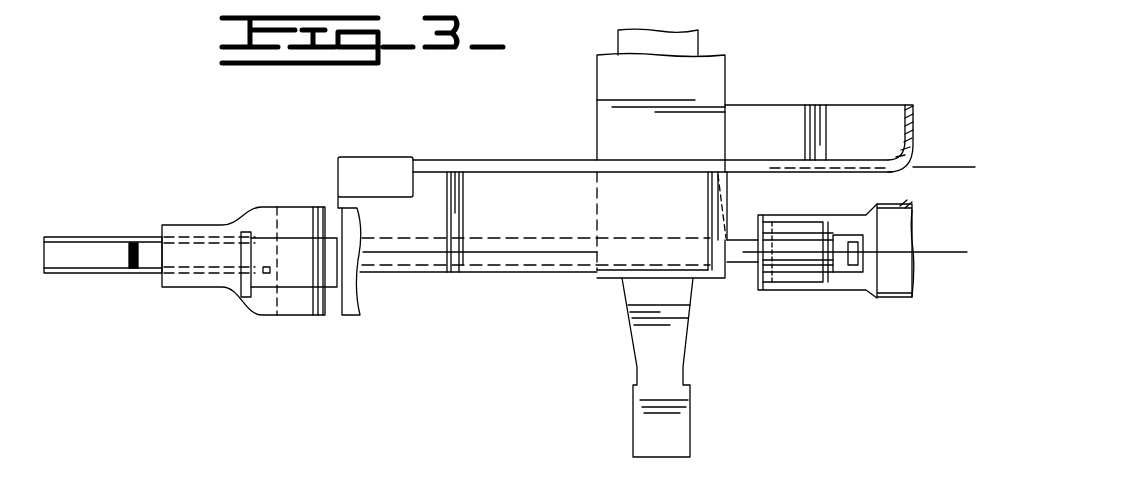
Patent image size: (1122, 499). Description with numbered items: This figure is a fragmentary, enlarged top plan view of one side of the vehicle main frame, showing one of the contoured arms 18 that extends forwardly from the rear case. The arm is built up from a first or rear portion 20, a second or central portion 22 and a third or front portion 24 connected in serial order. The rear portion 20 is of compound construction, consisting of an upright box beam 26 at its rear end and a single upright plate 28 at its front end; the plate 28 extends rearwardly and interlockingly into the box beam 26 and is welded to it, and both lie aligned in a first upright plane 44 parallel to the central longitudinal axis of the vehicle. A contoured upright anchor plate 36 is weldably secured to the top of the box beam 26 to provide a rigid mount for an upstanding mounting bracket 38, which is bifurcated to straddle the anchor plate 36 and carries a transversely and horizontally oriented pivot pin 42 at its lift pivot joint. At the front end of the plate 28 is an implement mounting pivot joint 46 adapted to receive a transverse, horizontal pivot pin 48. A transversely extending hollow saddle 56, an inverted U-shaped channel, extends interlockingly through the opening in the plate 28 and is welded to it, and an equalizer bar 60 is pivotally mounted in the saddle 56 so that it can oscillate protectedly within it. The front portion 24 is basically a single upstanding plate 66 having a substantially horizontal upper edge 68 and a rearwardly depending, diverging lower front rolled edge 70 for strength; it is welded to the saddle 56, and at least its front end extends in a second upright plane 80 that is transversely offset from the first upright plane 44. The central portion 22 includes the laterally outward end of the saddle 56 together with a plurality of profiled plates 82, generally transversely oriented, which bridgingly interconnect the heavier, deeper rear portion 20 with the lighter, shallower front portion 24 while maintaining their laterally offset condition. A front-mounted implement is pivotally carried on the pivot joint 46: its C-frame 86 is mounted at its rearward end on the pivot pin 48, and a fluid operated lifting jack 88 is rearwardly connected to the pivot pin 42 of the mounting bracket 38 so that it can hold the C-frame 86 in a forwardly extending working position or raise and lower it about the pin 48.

The contoured arms 18 is at (438, 153).
The first or rear portion 20 is at (130, 227).
The second or central portion 22 is at (537, 160).
The third or front portion 24 is at (840, 98).
The upright box beam 26 is at (86, 262).
The single upright plate 28 is at (742, 245).
The contoured upright anchor plate 36 is at (136, 262).
The upstanding mounting bracket 38 is at (250, 210).
The pivot pin 42 is at (268, 300).
The first upright plane 44 is at (488, 258).
The implement mounting pivot joint 46 is at (755, 270).
The pivot pin 48 is at (828, 282).
The hollow saddle 56 is at (617, 93).
The equalizer bar 60 is at (632, 410).
The upstanding plate 66 is at (888, 125).
The upper edge 68 is at (778, 160).
The lower front rolled edge 70 is at (795, 105).
The second upright plane 80 is at (915, 177).
The profiled plates 82 is at (704, 193).
The C-frame 86 is at (878, 205).
The lifting jacks 88 is at (354, 305).